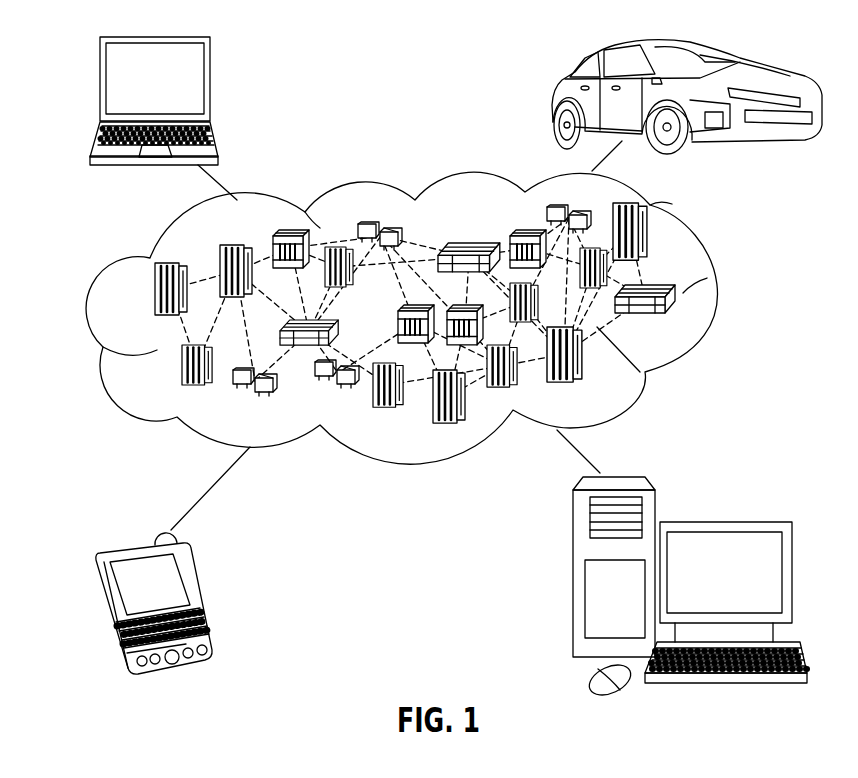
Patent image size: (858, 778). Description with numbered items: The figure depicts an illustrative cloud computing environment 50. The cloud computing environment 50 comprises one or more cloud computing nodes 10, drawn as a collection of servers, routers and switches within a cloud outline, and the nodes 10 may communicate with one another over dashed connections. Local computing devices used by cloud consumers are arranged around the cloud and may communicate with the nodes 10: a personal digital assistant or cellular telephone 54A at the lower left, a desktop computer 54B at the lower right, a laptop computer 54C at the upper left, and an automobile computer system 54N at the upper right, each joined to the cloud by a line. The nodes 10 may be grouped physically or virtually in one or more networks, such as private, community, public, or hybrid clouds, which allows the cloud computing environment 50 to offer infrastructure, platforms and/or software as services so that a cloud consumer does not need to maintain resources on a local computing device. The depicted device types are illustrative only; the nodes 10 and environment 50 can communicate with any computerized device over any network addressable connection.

The cloud computing nodes 10 is at (428, 318).
The cloud computing environment 50 is at (729, 299).
The personal digital assistant or cellular telephone 54A is at (178, 603).
The desktop computer 54B is at (722, 522).
The laptop computer 54C is at (178, 101).
The automobile computer system 54N is at (551, 99).